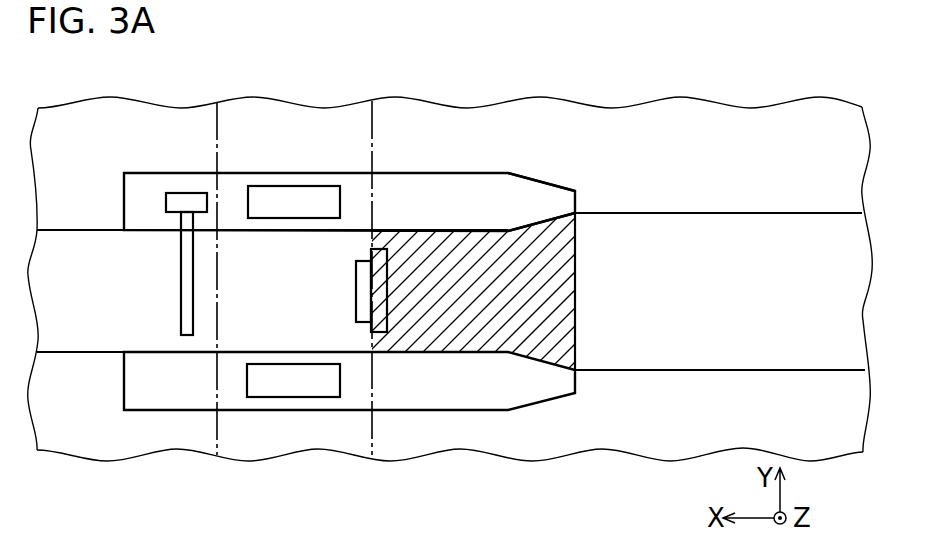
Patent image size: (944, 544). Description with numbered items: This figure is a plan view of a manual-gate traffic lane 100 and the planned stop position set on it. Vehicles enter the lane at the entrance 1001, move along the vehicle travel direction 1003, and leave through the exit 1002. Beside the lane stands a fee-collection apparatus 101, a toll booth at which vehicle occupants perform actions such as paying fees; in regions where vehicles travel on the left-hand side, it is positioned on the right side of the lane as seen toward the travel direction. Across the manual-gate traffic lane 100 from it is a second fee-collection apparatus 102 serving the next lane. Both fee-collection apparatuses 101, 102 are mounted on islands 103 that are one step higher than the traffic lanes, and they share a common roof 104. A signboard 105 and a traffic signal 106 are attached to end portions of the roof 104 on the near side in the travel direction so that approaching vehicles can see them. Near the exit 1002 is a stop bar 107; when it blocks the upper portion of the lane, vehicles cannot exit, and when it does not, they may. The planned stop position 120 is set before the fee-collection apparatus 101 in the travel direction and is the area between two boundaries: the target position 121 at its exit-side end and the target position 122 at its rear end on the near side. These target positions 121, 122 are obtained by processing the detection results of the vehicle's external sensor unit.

The manual-gate traffic lane 100 is at (610, 255).
The fee-collection apparatus 101 is at (290, 192).
The fee-collection apparatus 102 is at (290, 377).
The island 103 is at (542, 195).
The roof 104 is at (217, 138).
The signboard 105 is at (387, 288).
The traffic signal 106 is at (358, 284).
The stop bar 107 is at (182, 296).
The planned stop position 120 is at (465, 255).
The target position 121 is at (372, 242).
The target position 122 is at (576, 310).
The entrance to manual-gate traffic lane 1001 is at (853, 262).
The exit from manual-gate traffic lane 1002 is at (50, 265).
The travel direction 1003 is at (690, 298).